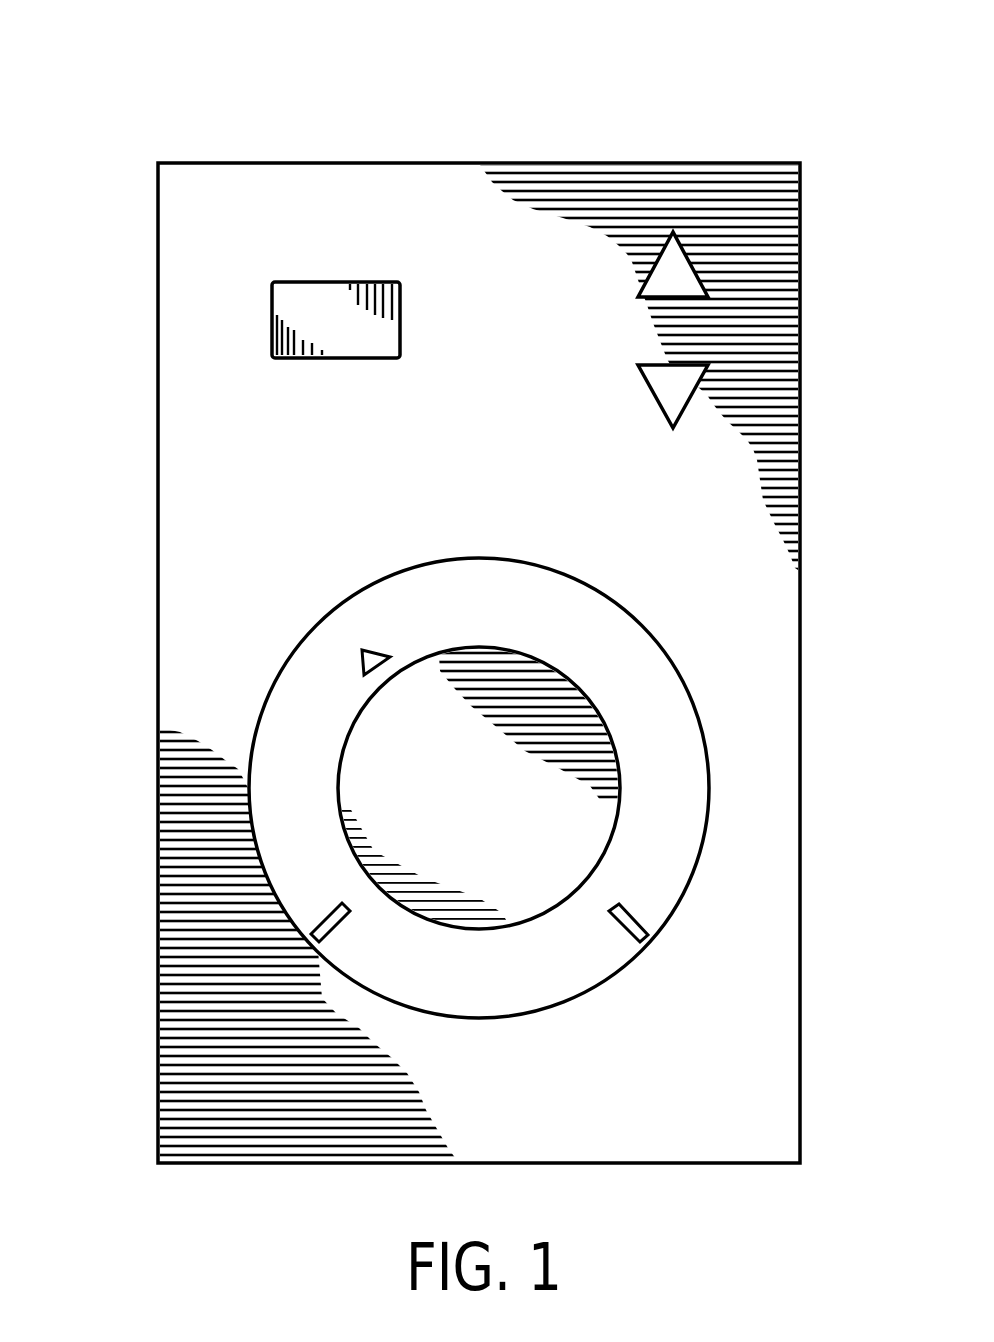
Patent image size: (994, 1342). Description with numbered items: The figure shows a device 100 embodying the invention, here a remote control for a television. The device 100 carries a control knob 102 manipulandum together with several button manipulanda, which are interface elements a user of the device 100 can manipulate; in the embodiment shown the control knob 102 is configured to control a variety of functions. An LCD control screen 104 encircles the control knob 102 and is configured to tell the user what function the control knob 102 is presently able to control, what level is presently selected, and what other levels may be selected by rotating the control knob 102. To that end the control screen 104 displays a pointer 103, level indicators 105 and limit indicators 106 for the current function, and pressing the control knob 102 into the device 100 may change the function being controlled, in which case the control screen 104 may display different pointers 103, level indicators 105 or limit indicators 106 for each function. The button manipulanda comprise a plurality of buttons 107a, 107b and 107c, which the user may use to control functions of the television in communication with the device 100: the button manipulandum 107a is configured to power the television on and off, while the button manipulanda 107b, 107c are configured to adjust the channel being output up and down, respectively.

The device 100 is at (246, 89).
The control knob 102 is at (549, 882).
The pointer 103 is at (362, 660).
The LCD control screen 104 is at (480, 586).
The level indicators 105 is at (423, 578).
The limit indicators 106 is at (320, 930).
The button manipulandum 107a is at (290, 310).
The button manipulandum 107b is at (673, 277).
The button manipulandum 107c is at (680, 390).